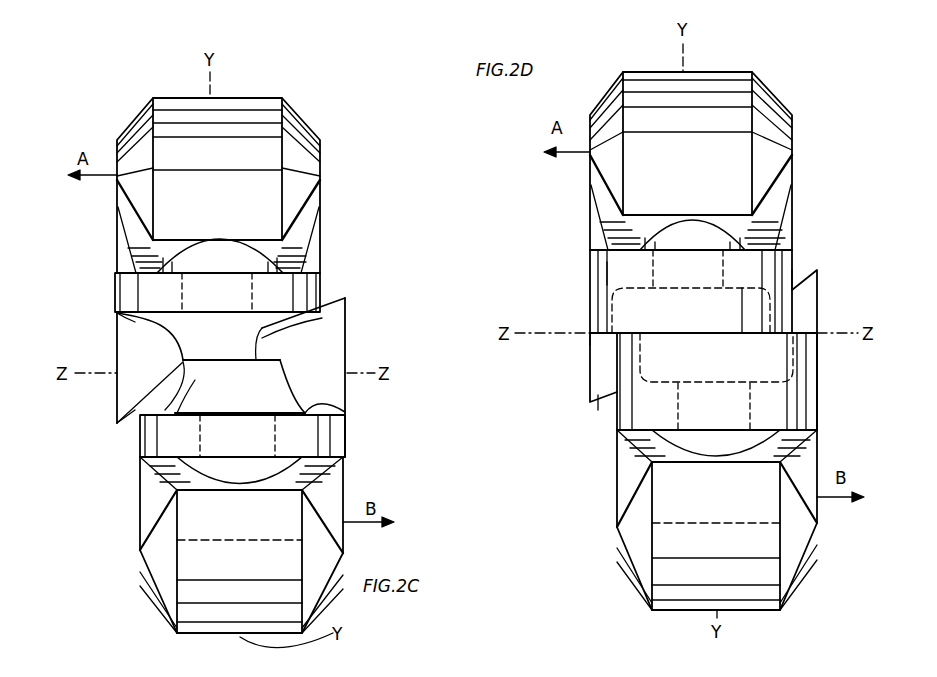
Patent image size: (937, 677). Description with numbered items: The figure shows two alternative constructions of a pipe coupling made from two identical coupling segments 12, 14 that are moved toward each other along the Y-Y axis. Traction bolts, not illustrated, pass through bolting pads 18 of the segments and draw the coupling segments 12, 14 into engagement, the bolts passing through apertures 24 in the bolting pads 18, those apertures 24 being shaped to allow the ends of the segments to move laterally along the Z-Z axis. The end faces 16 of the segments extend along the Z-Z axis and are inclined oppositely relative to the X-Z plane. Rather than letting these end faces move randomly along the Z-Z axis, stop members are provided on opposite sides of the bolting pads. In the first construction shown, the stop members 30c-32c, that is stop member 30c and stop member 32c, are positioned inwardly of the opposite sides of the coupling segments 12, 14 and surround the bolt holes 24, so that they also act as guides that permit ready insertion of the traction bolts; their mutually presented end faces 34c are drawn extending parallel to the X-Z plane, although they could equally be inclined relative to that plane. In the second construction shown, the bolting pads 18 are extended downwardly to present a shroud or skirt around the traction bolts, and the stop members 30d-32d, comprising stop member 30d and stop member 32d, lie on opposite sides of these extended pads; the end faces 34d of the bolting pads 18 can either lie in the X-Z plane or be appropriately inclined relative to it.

In FIG. 2C, the coupling segment 12 is at (255, 108).
In FIG. 2D, the coupling segment 12 is at (725, 80).
In FIG. 2C, the coupling segment 14 is at (200, 637).
In FIG. 2D, the coupling segment 14 is at (686, 603).
In FIG. 2C, the end face 16 is at (331, 297).
In FIG. 2D, the end face 16 is at (792, 290).
In FIG. 2D, the bolting pad 18 is at (607, 272).
In FIG. 2C, the aperture 24 is at (117, 313).
In FIG. 2C, the stop members 30c-32c is at (279, 365).
In FIG. 2C, the stop member 30c is at (279, 365).
In FIG. 2C, the stop member 32c is at (343, 322).
In FIG. 2C, the end face 34c is at (183, 362).
In FIG. 2D, the stop members 30d-32d is at (740, 317).
In FIG. 2D, the stop member 30d is at (740, 317).
In FIG. 2D, the stop member 32d is at (770, 268).
In FIG. 2D, the end face 34d is at (795, 333).